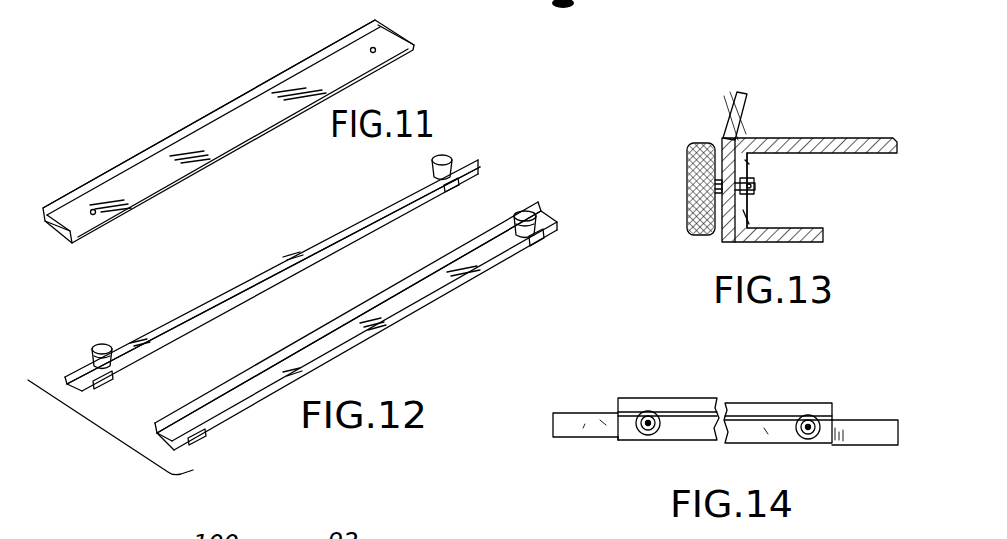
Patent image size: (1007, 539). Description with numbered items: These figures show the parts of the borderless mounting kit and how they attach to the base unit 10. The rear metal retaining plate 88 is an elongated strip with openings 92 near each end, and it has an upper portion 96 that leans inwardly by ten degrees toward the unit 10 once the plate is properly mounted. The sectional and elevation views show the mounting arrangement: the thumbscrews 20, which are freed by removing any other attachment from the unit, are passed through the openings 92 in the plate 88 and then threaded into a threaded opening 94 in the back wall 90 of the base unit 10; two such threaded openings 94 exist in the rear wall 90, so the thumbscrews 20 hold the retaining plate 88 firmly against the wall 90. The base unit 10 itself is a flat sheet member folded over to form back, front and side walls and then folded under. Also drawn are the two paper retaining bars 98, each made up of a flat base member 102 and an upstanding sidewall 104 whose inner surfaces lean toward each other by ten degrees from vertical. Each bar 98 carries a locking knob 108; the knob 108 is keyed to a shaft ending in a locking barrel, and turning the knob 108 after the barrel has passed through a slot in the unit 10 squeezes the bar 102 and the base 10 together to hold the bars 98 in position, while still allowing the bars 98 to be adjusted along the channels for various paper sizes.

In FIG. 13, the base unit 10 is at (857, 134).
In FIG. 14, the base unit 10 is at (854, 416).
In FIG. 13, the thumbscrews 20 is at (693, 233).
In FIG. 14, the thumbscrews 20 is at (640, 435).
In FIG. 11, the rear metal retaining plate 88 is at (177, 123).
In FIG. 13, the rear metal retaining plate 88 is at (755, 104).
In FIG. 14, the rear metal retaining plate 88 is at (635, 394).
In FIG. 13, the back wall 90 is at (748, 216).
In FIG. 14, the back wall 90 is at (583, 434).
In FIG. 11, the openings 92 is at (96, 213).
In FIG. 13, the openings 92 is at (748, 163).
In FIG. 13, the threaded opening 94 is at (756, 192).
In FIG. 14, the threaded opening 94 is at (652, 418).
In FIG. 11, the upper portion 96 is at (224, 108).
In FIG. 13, the upper portion 96 is at (737, 113).
In FIG. 14, the upper portion 96 is at (740, 407).
In FIG. 12, the paper retaining bars 98 is at (326, 302).
In FIG. 12, the flat base members 102 is at (271, 272).
In FIG. 12, the upstanding sidewalls 104 is at (428, 266).
In FIG. 12, the locking knobs 108 is at (108, 346).